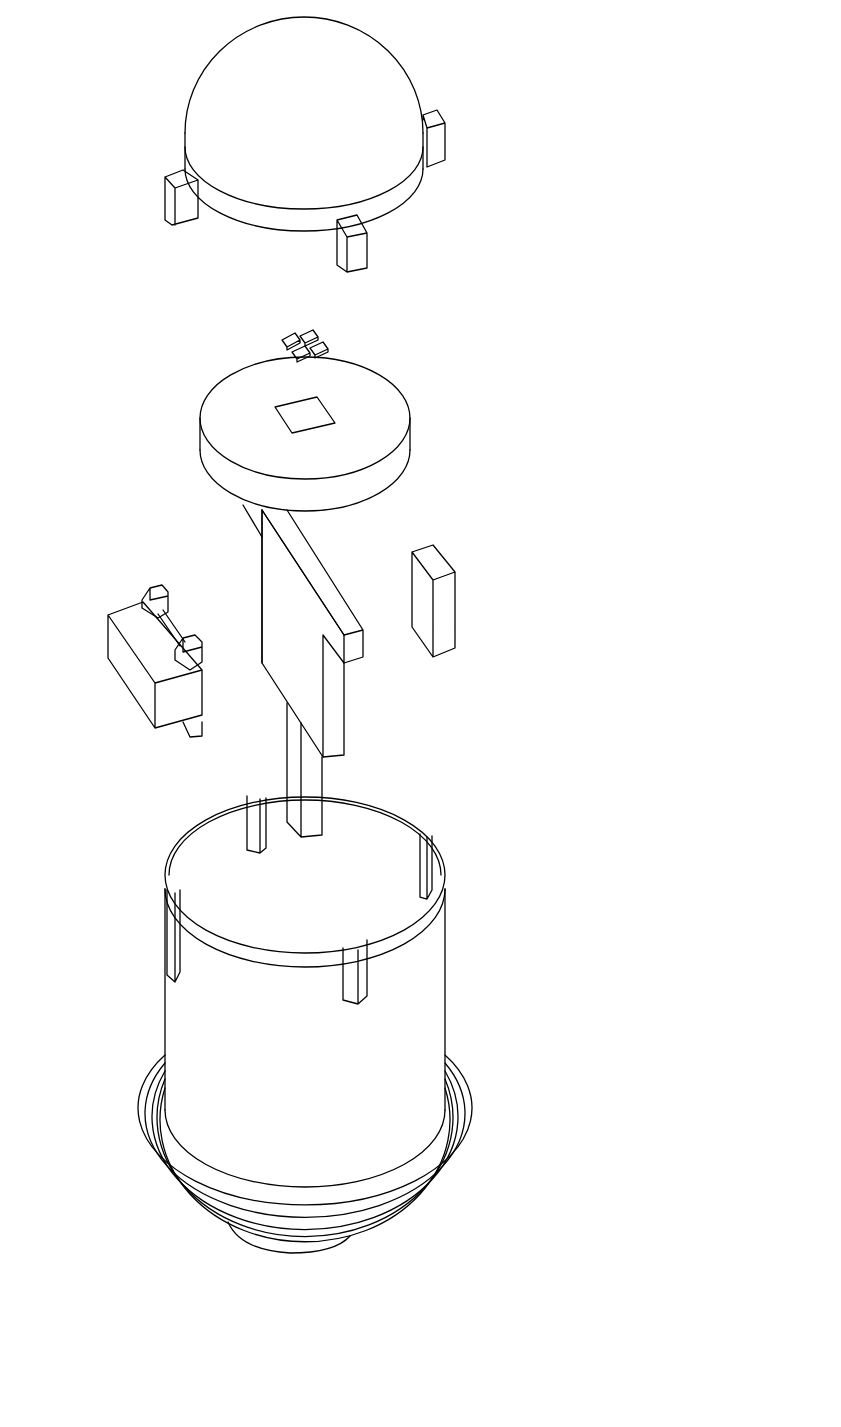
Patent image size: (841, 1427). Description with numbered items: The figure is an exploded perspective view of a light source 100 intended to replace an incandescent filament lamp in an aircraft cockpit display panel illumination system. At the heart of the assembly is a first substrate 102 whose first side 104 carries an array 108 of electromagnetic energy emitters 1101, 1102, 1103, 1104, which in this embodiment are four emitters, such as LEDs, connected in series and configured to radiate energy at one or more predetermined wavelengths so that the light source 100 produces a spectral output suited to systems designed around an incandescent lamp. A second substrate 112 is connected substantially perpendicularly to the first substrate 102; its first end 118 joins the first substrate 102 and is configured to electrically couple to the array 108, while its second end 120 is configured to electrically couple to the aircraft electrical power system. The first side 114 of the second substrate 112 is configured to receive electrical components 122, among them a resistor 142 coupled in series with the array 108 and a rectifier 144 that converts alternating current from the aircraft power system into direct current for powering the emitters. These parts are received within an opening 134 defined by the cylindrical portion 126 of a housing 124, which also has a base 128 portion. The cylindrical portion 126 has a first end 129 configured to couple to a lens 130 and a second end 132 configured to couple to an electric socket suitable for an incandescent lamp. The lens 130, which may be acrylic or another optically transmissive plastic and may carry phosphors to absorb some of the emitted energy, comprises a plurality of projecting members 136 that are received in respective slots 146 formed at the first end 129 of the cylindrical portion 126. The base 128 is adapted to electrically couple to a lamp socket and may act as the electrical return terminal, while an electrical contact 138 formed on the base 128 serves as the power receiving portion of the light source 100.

The light source 100 is at (567, 225).
The first substrate 102 is at (410, 452).
The first side 104 is at (398, 406).
The array 108 is at (278, 324).
The electromagnetic energy emitter 1101 is at (293, 358).
The electromagnetic energy emitter 1102 is at (281, 340).
The electromagnetic energy emitter 1103 is at (302, 330).
The electromagnetic energy emitter 1104 is at (326, 347).
The second substrate 112 is at (338, 714).
The first side 114 is at (272, 597).
The first end 118 is at (318, 570).
The second end 120 is at (311, 836).
The electrical components 122 is at (467, 516).
The housing 124 is at (462, 904).
The cylindrical portion 126 is at (166, 1040).
The base 128 is at (450, 1150).
The first end 129 is at (405, 803).
The lens 130 is at (380, 52).
The second end 132 is at (155, 1192).
The opening 134 is at (200, 864).
The projecting members 136 is at (440, 146).
The electrical contact 138 is at (288, 1250).
The resistor 142 is at (448, 616).
The rectifier 144 is at (127, 673).
The slots 146 is at (257, 808).